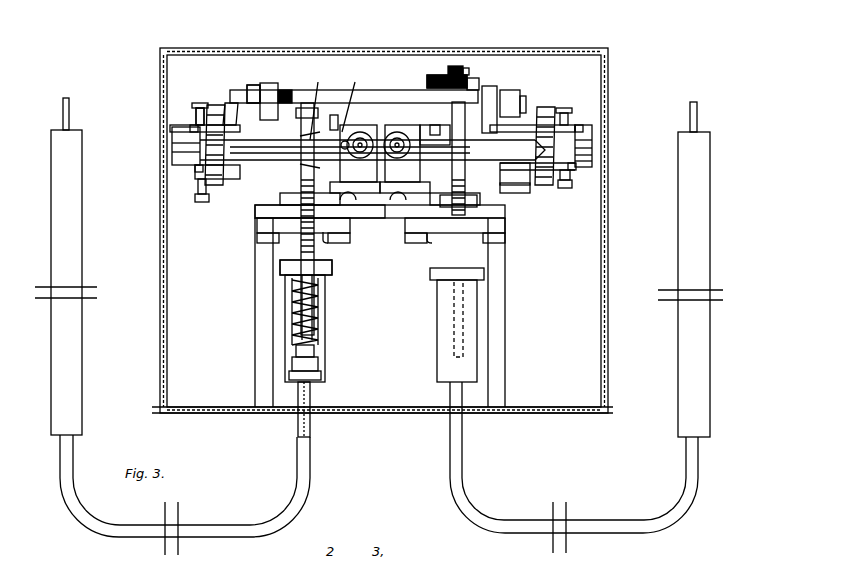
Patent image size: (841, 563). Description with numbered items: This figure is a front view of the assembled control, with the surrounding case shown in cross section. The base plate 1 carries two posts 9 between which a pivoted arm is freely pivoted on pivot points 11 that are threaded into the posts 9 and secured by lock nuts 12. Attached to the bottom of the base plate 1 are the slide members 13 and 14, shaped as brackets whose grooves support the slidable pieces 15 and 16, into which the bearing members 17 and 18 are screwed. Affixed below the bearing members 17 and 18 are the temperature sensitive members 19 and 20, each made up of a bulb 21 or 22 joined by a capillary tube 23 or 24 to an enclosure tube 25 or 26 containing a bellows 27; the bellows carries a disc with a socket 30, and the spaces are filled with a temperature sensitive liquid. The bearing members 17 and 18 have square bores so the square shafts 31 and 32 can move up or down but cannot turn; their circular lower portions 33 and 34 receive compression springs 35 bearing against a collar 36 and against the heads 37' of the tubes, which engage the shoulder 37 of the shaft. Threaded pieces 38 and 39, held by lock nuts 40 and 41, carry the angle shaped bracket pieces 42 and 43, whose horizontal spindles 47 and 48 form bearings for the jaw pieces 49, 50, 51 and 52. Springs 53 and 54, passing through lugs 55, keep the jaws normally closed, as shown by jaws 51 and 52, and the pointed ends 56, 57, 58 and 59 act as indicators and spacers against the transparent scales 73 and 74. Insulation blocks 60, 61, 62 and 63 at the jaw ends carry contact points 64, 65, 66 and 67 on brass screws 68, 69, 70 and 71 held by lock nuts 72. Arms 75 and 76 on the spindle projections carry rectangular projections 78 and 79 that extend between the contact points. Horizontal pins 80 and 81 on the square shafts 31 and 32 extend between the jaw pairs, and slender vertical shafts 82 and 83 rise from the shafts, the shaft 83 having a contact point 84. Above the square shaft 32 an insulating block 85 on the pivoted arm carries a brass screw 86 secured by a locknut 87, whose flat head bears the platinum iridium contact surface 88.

The base plate 1 is at (255, 212).
The posts 9 is at (495, 90).
The pivot points 11 is at (470, 92).
The lock nuts 12 is at (518, 96).
The slide member 13 is at (257, 226).
The slide member 14 is at (257, 239).
The slidable piece 15 is at (329, 243).
The slidable piece 16 is at (428, 243).
The bearing member 17 is at (314, 203).
The bearing member 18 is at (445, 200).
The temperature sensitive member 19 is at (272, 88).
The temperature sensitive member 20 is at (437, 276).
The bulb 21 is at (72, 236).
The bulb 22 is at (700, 208).
The capillary tube 23 is at (300, 508).
The capillary tube 24 is at (462, 505).
The enclosure tube 25 is at (318, 362).
The enclosure tube 26 is at (445, 368).
The bellows 27 is at (312, 318).
The socket 30 is at (321, 374).
The square shaft 31 is at (340, 148).
The square shaft 32 is at (402, 162).
The lower portion of shaft 33 is at (318, 297).
The lower portion of shaft 34 is at (456, 302).
The compression spring 35 is at (292, 298).
The collar 36 is at (314, 348).
The shoulder 37 is at (321, 266).
The head of tube 37' is at (272, 267).
The threaded piece 38 is at (290, 197).
The threaded piece 39 is at (518, 190).
The lock nut 40 is at (262, 210).
The lock nut 41 is at (480, 200).
The angle shaped bracket piece 42 is at (366, 193).
The angle shaped bracket piece 43 is at (400, 193).
The horizontal spindle 47 is at (362, 137).
The horizontal spindle 48 is at (430, 130).
The jaw piece 49 is at (342, 146).
The jaw piece 50 is at (345, 162).
The jaw piece 51 is at (436, 126).
The jaw piece 52 is at (517, 174).
The spring 53 is at (355, 99).
The spring 54 is at (396, 137).
The lug 55 is at (334, 120).
The pointed end 56 is at (235, 130).
The pointed end 57 is at (225, 178).
The pointed end 58 is at (530, 138).
The pointed end 59 is at (546, 107).
The insulation block 60 is at (196, 118).
The insulation block 61 is at (201, 180).
The insulation block 62 is at (588, 127).
The insulation block 63 is at (570, 178).
The contact point 64 is at (172, 143).
The contact point 65 is at (200, 172).
The contact point 66 is at (592, 145).
The contact point 67 is at (592, 158).
The brass screw 68 is at (201, 103).
The brass screw 69 is at (203, 202).
The brass screw 70 is at (567, 115).
The brass screw 71 is at (565, 188).
The lock nuts 72 is at (190, 128).
The temperature scale 73 is at (232, 103).
The temperature scale 74 is at (565, 108).
The arm 75 is at (180, 153).
The arm 76 is at (592, 136).
The rectangular projection 78 is at (186, 146).
The rectangular projection 79 is at (592, 152).
The horizontal pin 80 is at (320, 103).
The horizontal pin 81 is at (527, 100).
The vertical shaft 82 is at (303, 110).
The vertical shaft 83 is at (465, 113).
The contact point 84 is at (472, 80).
The insulating block 85 is at (440, 75).
The brass screw 86 is at (466, 68).
The locknut 87 is at (455, 66).
The contact surface 88 is at (430, 88).